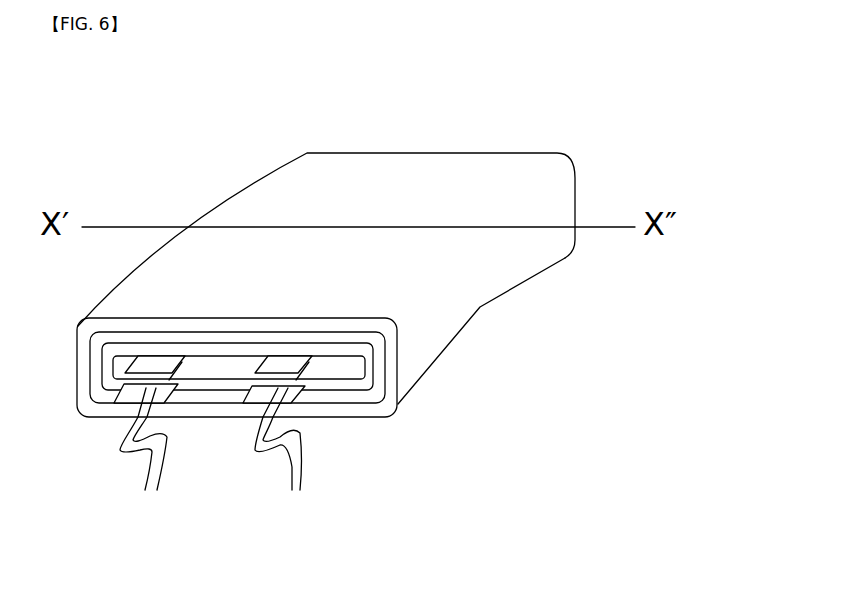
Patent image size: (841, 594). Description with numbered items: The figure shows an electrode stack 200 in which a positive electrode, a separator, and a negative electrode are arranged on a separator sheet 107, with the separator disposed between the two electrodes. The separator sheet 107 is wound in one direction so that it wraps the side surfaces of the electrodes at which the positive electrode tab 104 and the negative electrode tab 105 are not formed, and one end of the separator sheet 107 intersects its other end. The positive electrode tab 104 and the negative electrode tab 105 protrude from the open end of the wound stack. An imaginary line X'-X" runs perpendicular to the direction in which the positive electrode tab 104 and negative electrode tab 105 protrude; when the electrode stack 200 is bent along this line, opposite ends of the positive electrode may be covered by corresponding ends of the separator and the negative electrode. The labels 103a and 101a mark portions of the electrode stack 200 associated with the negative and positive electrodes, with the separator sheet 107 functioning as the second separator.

The electrode stack 200 is at (226, 165).
The separator sheet 107 is at (428, 322).
The first connecting terminal 103a is at (153, 360).
The second connecting terminal 101a is at (278, 360).
The positive electrode tab 104 is at (145, 460).
The negative electrode tab 105 is at (286, 460).